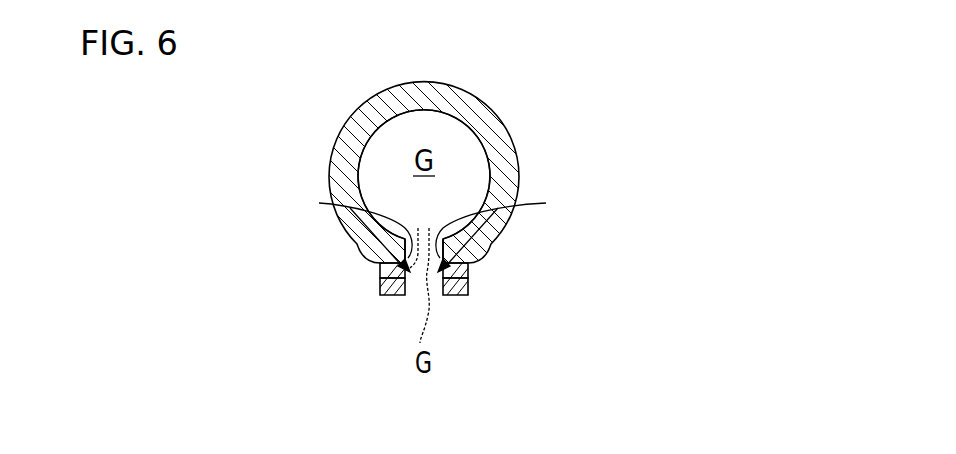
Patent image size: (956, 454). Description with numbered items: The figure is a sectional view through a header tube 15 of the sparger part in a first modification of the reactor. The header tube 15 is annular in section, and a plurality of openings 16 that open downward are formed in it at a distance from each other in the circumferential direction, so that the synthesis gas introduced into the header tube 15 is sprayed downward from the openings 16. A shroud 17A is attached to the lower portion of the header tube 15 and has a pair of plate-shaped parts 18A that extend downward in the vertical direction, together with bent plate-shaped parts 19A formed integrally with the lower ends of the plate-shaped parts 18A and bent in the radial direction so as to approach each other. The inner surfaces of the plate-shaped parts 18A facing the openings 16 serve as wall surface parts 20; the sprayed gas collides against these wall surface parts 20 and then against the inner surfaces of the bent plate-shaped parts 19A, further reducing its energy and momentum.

The header tube 15 is at (503, 152).
The opening 16 is at (447, 238).
The shroud 17A is at (272, 227).
The plate-shaped part 18A is at (380, 275).
The bent plate-shaped part 19A is at (395, 300).
The wall surface part 20 is at (431, 222).